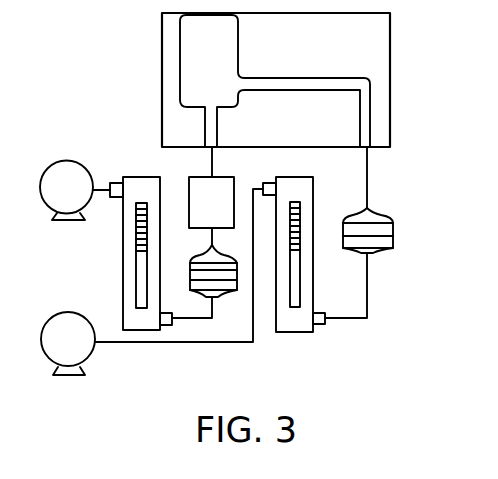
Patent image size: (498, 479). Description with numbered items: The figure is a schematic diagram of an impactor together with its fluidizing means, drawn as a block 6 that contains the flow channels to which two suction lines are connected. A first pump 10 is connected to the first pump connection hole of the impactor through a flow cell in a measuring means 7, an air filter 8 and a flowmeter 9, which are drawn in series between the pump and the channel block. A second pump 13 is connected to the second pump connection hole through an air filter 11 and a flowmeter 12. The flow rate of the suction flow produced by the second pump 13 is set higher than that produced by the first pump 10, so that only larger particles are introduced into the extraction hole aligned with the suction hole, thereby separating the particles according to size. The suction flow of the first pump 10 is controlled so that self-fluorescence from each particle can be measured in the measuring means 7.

The flow channel block 6 is at (162, 65).
The measuring means 7 is at (234, 182).
The air filter 8 is at (195, 263).
The flowmeter 9 is at (140, 177).
The first pump 10 is at (73, 160).
The air filter 11 is at (385, 218).
The flowmeter 12 is at (314, 185).
The second pump 13 is at (77, 313).